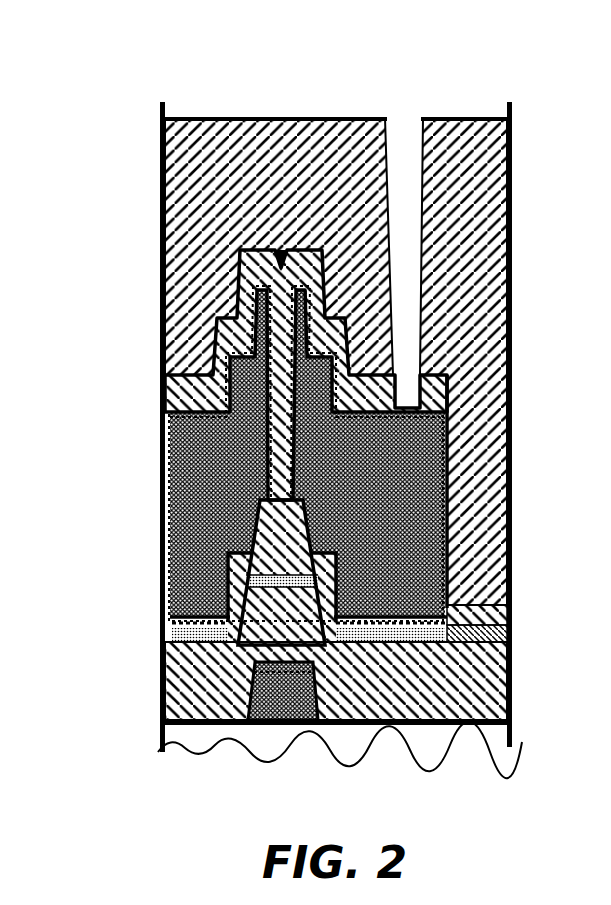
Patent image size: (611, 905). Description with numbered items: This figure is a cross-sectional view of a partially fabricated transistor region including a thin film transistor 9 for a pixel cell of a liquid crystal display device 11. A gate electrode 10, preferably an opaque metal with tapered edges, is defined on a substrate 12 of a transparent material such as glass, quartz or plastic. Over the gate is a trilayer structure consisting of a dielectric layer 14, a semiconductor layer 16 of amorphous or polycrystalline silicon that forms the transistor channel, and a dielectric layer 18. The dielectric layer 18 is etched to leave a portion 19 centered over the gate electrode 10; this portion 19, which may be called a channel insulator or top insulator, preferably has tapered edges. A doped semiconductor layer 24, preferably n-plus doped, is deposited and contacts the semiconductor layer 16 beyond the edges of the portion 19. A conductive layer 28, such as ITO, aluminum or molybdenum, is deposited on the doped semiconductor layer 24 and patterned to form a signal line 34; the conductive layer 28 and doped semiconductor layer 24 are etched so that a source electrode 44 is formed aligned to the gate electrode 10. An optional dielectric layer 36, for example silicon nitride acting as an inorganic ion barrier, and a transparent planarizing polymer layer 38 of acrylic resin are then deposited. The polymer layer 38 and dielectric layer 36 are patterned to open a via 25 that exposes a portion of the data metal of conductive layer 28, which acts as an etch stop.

The thin film transistor 9 is at (128, 298).
The gate electrode 10 is at (262, 725).
The liquid crystal display device 11 is at (143, 137).
The substrate 12 is at (460, 745).
The dielectric layer 14 is at (493, 680).
The semiconductor layer 16 is at (510, 637).
The dielectric layer 18 is at (243, 520).
The portion of dielectric layer 19 is at (283, 560).
The doped semiconductor layer 24 is at (510, 612).
The via 25 is at (405, 147).
The conductive layer 28 is at (160, 412).
The signal line 34 is at (424, 448).
The dielectric layer 36 is at (160, 362).
The transparent planarizing polymer layer 38 is at (274, 148).
The source electrode 44 is at (328, 557).